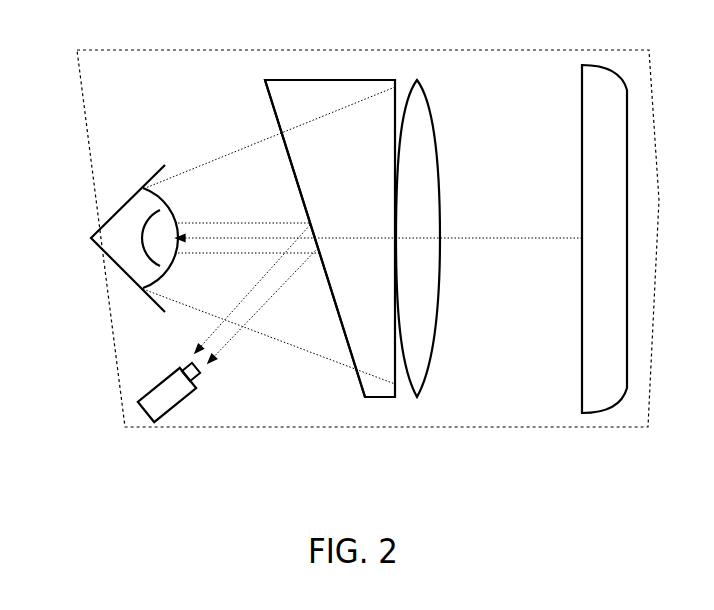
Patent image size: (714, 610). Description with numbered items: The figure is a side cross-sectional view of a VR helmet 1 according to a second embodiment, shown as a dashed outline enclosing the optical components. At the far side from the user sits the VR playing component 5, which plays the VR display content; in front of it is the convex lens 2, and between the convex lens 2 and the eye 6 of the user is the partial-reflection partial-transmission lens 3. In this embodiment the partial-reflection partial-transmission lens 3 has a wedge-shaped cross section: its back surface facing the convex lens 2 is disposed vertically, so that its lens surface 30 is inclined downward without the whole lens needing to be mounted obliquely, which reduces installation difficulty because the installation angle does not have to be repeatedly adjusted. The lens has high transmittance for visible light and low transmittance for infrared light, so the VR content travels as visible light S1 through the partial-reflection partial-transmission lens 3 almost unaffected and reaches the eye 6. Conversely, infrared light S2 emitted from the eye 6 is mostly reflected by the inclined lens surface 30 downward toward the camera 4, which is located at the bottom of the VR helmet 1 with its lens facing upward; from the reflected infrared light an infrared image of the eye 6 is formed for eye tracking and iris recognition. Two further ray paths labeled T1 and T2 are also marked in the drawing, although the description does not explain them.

The VR helmet 1 is at (488, 50).
The convex lens 2 is at (417, 397).
The partial-reflection partial-transmission lens 3 is at (365, 397).
The lens surface 30 is at (298, 183).
The camera 4 is at (157, 407).
The VR playing component 5 is at (598, 397).
The eye 6 is at (122, 203).
The visible light S1 is at (493, 238).
The infrared light S2 is at (215, 362).
The first light ray T1 is at (197, 167).
The second light ray T2 is at (178, 302).